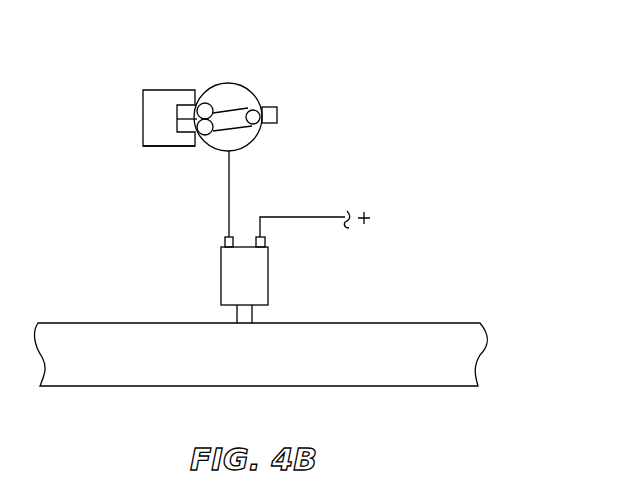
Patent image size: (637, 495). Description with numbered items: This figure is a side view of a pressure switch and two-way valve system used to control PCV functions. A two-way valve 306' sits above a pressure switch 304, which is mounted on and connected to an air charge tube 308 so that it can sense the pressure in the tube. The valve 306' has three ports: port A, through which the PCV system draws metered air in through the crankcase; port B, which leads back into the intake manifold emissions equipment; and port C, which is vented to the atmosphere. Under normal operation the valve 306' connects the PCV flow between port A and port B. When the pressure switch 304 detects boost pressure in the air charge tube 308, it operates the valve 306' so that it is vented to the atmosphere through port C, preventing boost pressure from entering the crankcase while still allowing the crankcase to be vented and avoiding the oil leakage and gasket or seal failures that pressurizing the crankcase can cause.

The two-way valve 306' is at (246, 88).
The pressure switch 304 is at (221, 278).
The air charge tube 308 is at (380, 324).
The port A is at (277, 116).
The port B is at (163, 147).
The port C is at (165, 90).